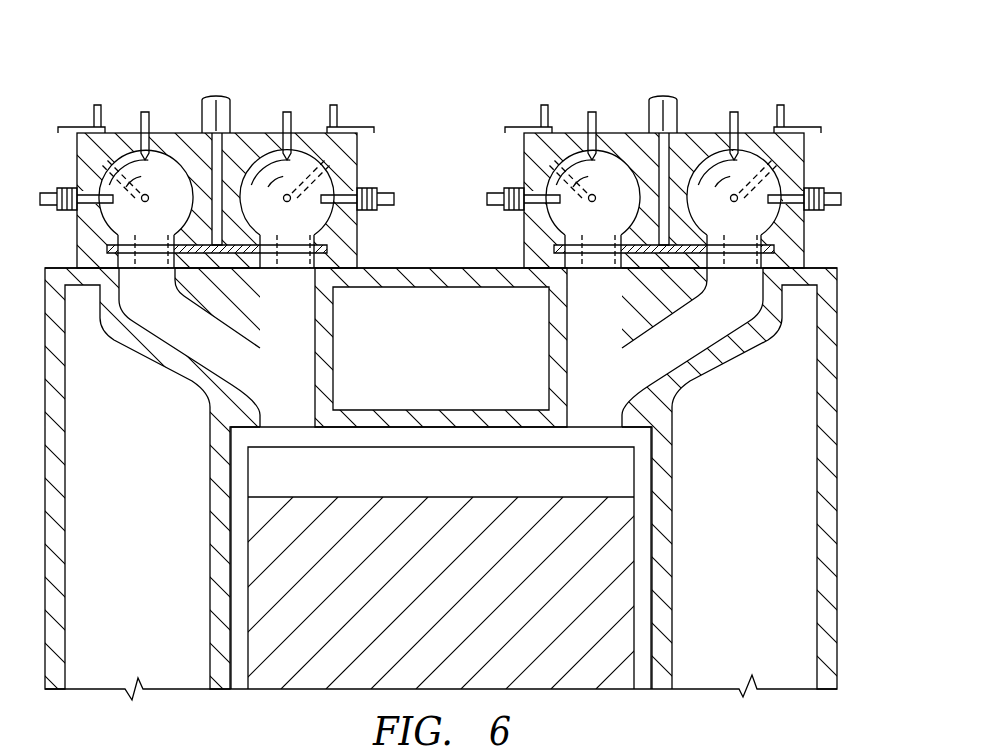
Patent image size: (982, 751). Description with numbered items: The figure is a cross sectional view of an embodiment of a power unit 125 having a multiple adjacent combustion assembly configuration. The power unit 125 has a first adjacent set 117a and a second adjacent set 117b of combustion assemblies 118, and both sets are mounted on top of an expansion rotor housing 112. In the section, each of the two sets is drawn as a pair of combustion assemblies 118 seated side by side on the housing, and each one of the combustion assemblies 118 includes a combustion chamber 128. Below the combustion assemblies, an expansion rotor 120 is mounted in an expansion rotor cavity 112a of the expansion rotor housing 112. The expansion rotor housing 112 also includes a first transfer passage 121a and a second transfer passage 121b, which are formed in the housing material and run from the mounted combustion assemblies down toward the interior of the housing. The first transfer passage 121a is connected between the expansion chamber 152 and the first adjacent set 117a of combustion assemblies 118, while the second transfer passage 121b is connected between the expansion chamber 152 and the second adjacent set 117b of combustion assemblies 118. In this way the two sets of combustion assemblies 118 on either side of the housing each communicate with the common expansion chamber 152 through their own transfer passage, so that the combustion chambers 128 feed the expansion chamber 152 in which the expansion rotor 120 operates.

The expansion rotor housing 112 is at (830, 498).
The expansion rotor cavity 112a is at (642, 650).
The first adjacent set of combustion assemblies 117a is at (126, 69).
The second adjacent set of combustion assemblies 117b is at (712, 65).
The combustion assembly 118 is at (177, 132).
The expansion rotor 120 is at (583, 683).
The first transfer passage 121a is at (275, 378).
The second transfer passage 121b is at (618, 372).
The power unit 125 is at (574, 56).
The combustion chamber 128 is at (117, 216).
The expansion chamber 152 is at (642, 482).